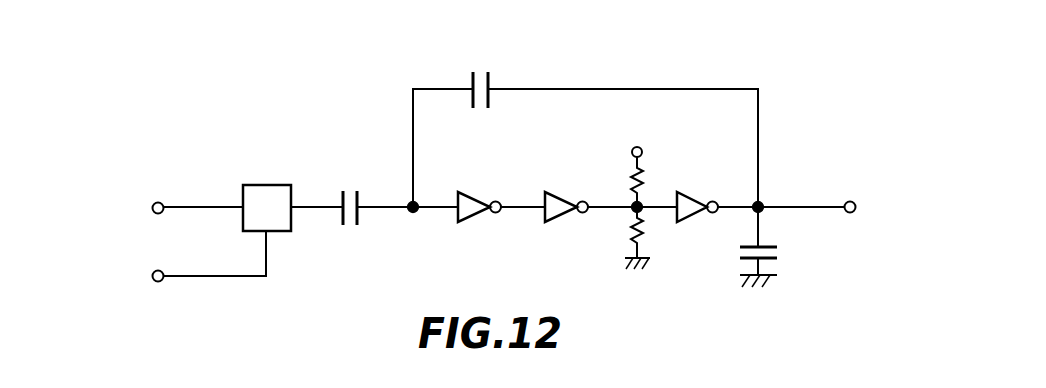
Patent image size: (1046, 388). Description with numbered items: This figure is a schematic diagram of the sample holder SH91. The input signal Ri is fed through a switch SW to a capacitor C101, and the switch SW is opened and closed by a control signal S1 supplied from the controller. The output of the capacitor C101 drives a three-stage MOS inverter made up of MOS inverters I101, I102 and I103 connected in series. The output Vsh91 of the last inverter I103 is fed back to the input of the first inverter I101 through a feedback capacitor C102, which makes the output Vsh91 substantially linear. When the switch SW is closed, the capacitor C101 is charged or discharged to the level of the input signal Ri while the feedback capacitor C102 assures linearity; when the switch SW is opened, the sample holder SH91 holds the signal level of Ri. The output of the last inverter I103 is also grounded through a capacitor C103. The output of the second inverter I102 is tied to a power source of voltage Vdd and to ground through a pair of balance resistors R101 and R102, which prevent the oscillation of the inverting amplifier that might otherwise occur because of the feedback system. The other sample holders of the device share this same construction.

The sample holder SH91 is at (518, 151).
The input signal Ri is at (137, 207).
The control signal S1 is at (188, 261).
The switch SW is at (267, 208).
The capacitor C101 is at (350, 187).
The feedback capacitor C102 is at (585, 122).
The capacitor C103 is at (793, 247).
The MOS inverter I101 is at (452, 218).
The MOS inverter I102 is at (542, 218).
The MOS inverter I103 is at (702, 218).
The balance resistor R101 is at (627, 178).
The balance resistor R102 is at (627, 227).
The power source voltage Vdd is at (704, 175).
The output Vsh91 is at (886, 207).